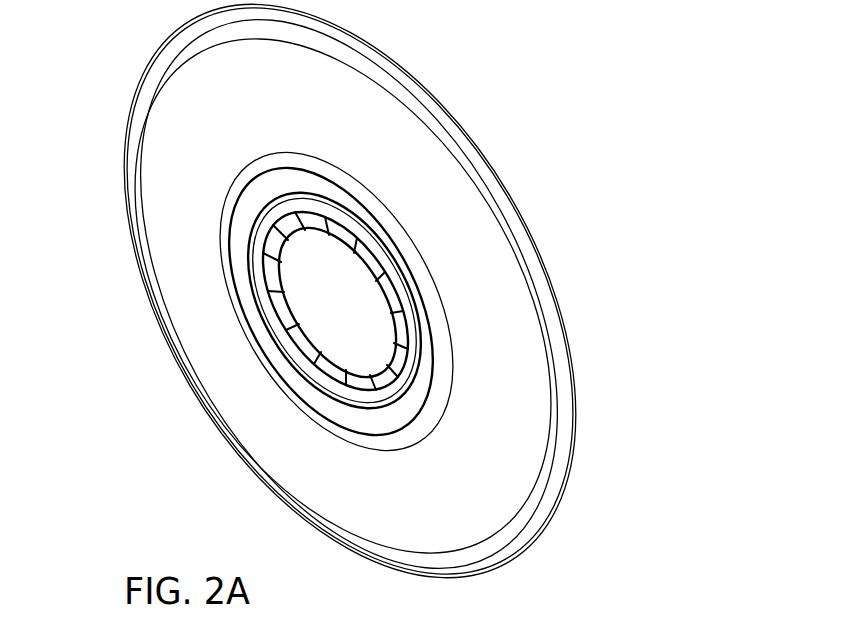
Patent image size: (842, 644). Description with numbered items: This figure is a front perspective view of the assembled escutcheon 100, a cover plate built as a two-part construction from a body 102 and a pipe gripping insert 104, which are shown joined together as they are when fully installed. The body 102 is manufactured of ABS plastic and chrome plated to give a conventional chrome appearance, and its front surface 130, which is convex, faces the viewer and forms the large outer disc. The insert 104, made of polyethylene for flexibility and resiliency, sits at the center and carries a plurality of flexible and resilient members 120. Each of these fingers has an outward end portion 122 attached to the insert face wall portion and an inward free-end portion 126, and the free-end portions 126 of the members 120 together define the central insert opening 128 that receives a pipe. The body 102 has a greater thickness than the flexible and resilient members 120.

The escutcheon 100 is at (679, 148).
The body 102 is at (434, 93).
The insert 104 is at (302, 362).
The flexible and resilient members 120 is at (302, 344).
The outward end portion 122 is at (338, 372).
The inward free-end portion 126 is at (337, 357).
The central insert opening 128 is at (330, 280).
The front surface 130 is at (504, 454).